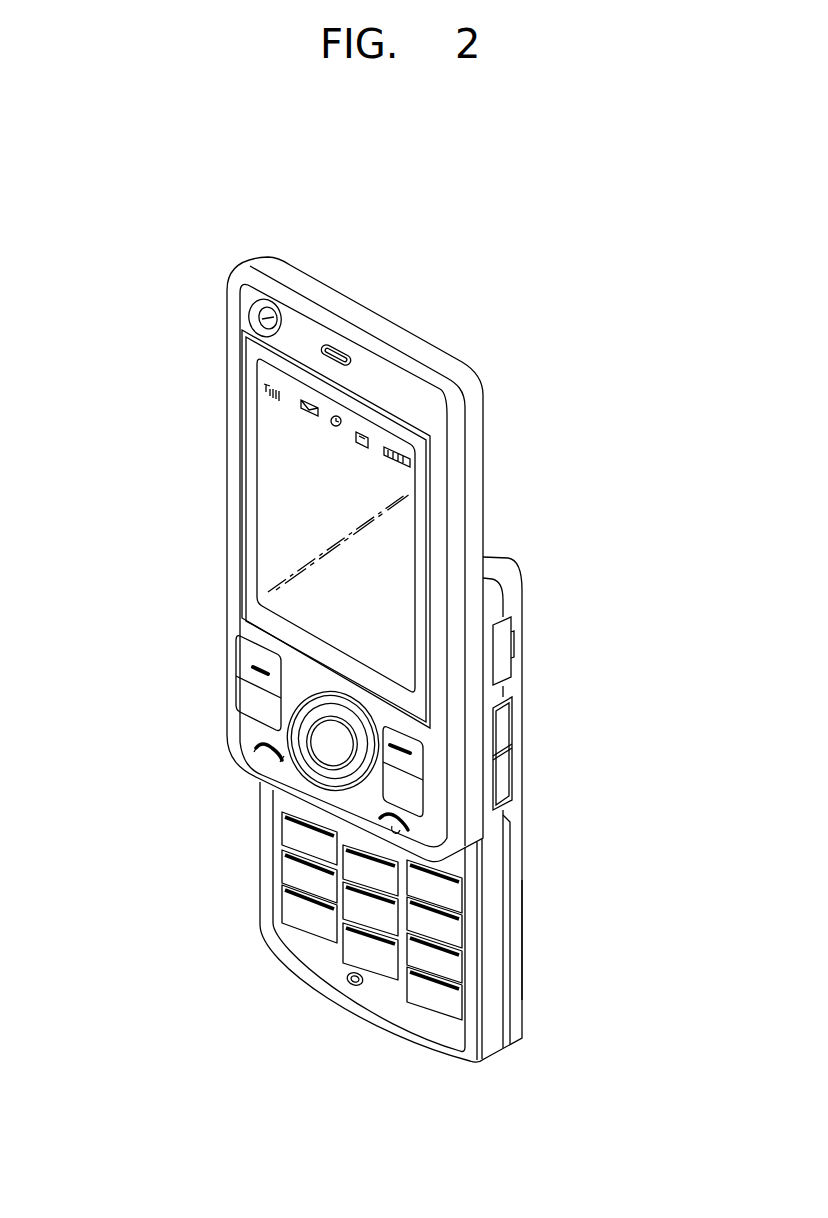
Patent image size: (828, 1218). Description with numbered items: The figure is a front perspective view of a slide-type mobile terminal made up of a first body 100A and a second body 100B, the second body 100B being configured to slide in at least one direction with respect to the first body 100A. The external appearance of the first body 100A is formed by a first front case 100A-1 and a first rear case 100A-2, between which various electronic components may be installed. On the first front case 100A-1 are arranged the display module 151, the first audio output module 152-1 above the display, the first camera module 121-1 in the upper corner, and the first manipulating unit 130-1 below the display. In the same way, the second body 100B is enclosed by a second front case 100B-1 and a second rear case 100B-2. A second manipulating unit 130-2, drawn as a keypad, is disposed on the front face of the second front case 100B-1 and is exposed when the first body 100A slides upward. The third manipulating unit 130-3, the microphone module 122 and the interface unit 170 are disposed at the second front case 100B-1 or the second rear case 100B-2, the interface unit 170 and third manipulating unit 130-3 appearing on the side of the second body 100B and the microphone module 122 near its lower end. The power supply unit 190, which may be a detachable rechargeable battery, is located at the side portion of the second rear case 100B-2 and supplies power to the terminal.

The first body 100A is at (188, 387).
The first front case 100A-1 is at (456, 451).
The first rear case 100A-2 is at (478, 428).
The second body 100B is at (247, 847).
The second front case 100B-1 is at (497, 570).
The second rear case 100B-2 is at (500, 613).
The first camera module 121-1 is at (264, 318).
The microphone module 122 is at (354, 986).
The first manipulating unit 130-1 is at (250, 694).
The second manipulating unit 130-2 is at (287, 898).
The third manipulating unit 130-3 is at (505, 781).
The display module 151 is at (268, 481).
The first audio output module 152-1 is at (335, 347).
The interface unit 170 is at (506, 645).
The power supply unit 190 is at (517, 938).